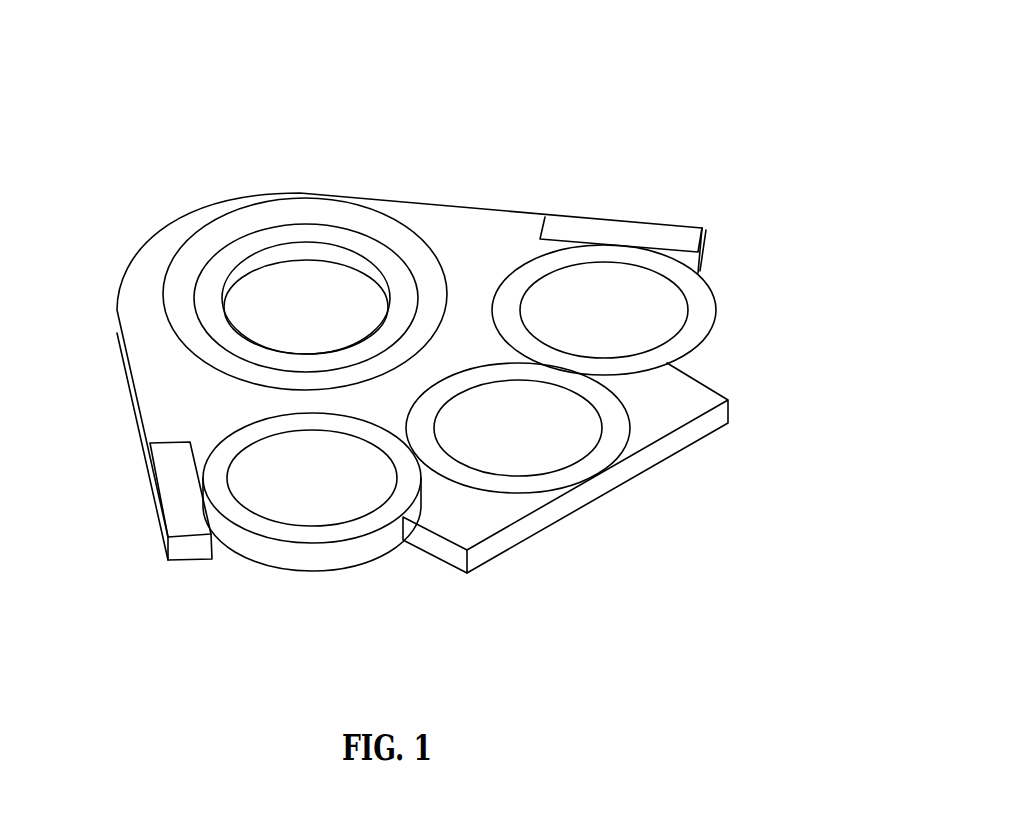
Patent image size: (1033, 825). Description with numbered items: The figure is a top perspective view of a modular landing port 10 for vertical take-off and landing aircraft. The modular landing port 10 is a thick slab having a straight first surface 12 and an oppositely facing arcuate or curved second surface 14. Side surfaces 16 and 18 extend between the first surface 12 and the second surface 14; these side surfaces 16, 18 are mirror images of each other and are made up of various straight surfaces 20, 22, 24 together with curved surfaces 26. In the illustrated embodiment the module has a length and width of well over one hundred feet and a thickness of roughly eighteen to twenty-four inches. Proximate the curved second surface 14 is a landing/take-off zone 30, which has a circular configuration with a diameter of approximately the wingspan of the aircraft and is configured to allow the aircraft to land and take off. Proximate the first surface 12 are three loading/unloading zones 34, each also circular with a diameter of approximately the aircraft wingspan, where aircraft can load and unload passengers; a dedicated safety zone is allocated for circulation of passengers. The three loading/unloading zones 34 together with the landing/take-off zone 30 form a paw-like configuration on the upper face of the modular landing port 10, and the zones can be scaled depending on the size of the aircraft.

The modular landing port 10 is at (435, 348).
The first surface 12 is at (435, 396).
The second surface 14 is at (435, 396).
The side surface 16 is at (160, 548).
The side surface 18 is at (637, 215).
The straight surface 20 is at (132, 402).
The straight surface 22 is at (503, 428).
The straight surface 24 is at (718, 392).
The curved surface 26 is at (293, 552).
The landing/take-off zone 30 is at (318, 278).
The loading/unloading zone 34 is at (657, 313).